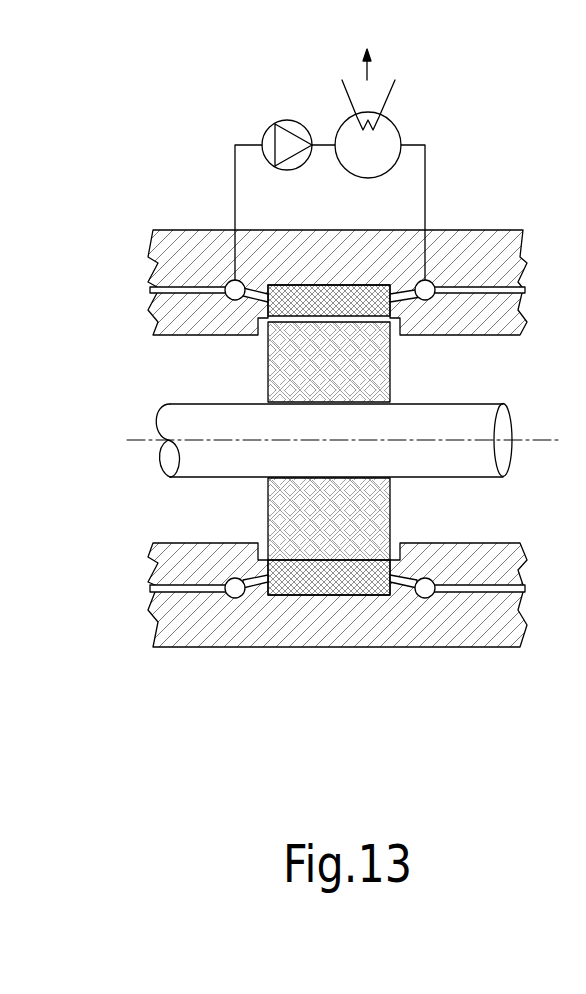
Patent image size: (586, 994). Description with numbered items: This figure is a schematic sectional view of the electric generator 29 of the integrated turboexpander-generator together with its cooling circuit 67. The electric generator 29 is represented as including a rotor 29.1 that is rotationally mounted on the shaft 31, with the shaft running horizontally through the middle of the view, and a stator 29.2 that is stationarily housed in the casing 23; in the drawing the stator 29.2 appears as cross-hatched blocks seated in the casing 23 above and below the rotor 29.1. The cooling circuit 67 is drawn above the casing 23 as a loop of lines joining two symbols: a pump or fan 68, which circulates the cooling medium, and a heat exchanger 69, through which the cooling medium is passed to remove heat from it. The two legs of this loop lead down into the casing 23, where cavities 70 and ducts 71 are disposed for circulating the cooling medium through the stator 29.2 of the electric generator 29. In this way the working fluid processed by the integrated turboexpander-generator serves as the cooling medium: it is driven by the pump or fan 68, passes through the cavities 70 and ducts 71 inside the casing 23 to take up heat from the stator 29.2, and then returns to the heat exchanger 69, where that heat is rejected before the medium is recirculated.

The casing 23 is at (228, 632).
The electric generator 29 is at (416, 470).
The rotor 29.1 is at (377, 377).
The stator 29.2 is at (320, 300).
The shaft 31 is at (470, 415).
The cooling circuit 67 is at (366, 164).
The pump or fan 68 is at (288, 120).
The heat exchanger 69 is at (380, 177).
The cavities 70 is at (427, 580).
The ducts 71 is at (257, 580).